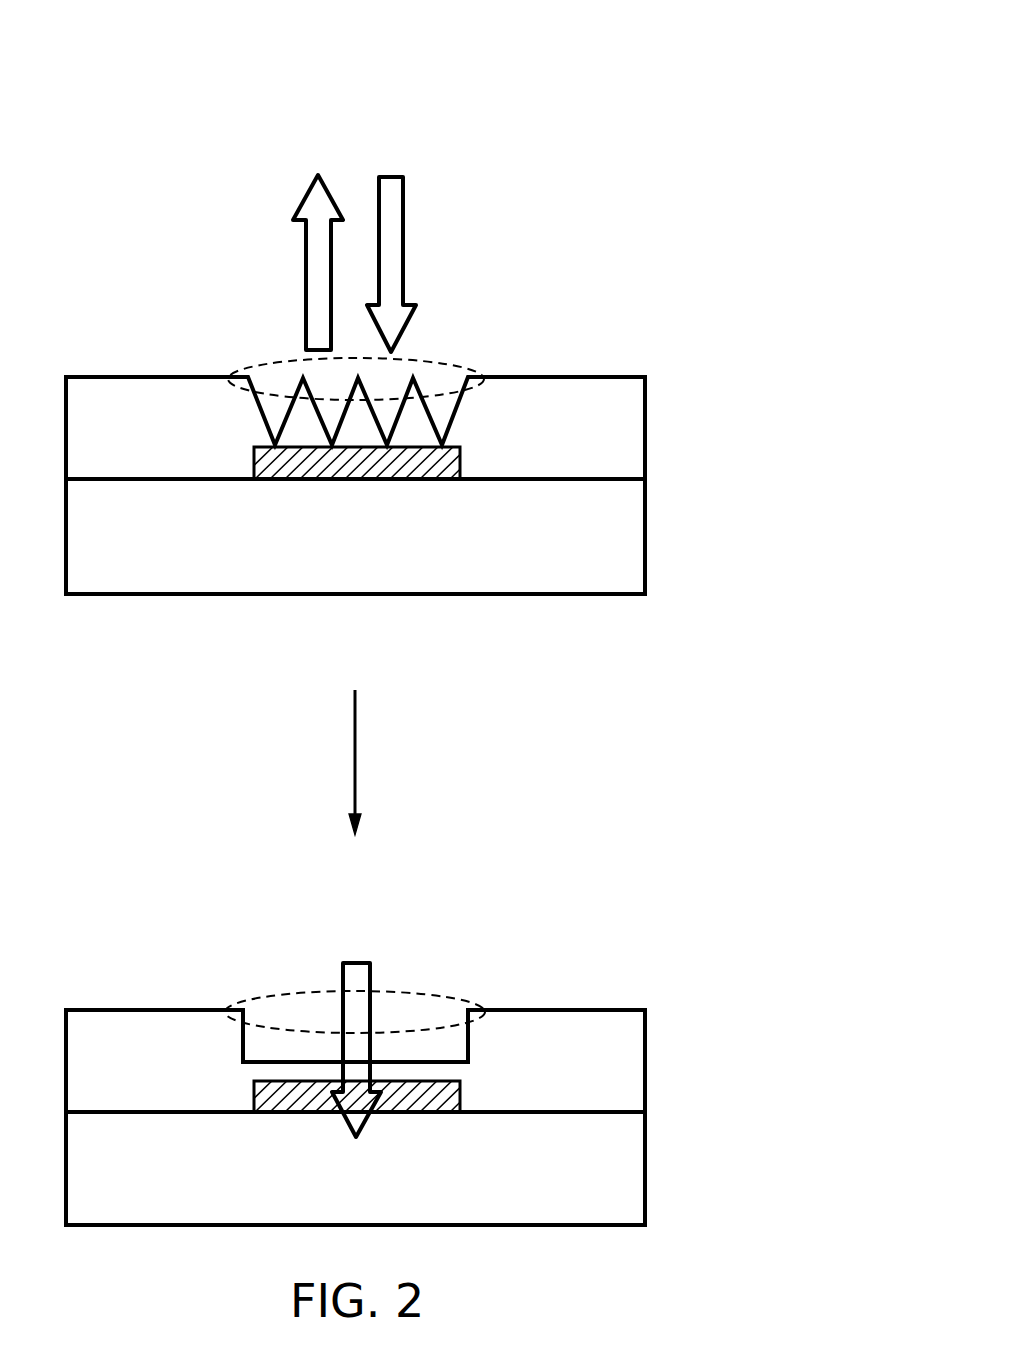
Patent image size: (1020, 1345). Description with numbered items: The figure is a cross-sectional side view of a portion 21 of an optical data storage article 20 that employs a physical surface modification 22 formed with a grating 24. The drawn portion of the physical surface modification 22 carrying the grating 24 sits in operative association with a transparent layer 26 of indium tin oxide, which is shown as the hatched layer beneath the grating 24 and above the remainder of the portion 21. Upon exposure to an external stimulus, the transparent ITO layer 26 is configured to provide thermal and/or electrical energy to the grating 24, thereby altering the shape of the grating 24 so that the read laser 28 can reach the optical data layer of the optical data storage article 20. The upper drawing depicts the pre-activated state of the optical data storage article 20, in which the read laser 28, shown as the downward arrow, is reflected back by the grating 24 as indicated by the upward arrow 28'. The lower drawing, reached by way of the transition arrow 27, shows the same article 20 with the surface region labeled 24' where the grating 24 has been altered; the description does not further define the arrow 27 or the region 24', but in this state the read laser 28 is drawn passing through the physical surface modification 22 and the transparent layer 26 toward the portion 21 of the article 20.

The optical data storage article 20 is at (636, 60).
The portion of the optical data storage article 21 is at (648, 535).
The physical surface modification 22 is at (655, 428).
The grating 24 is at (382, 355).
The smoothed surface region 24' is at (384, 989).
The transparent layer 26 is at (254, 465).
The process step arrow 27 is at (357, 750).
The read laser 28 is at (429, 264).
The arrow indicating reflected read laser 28' is at (293, 262).